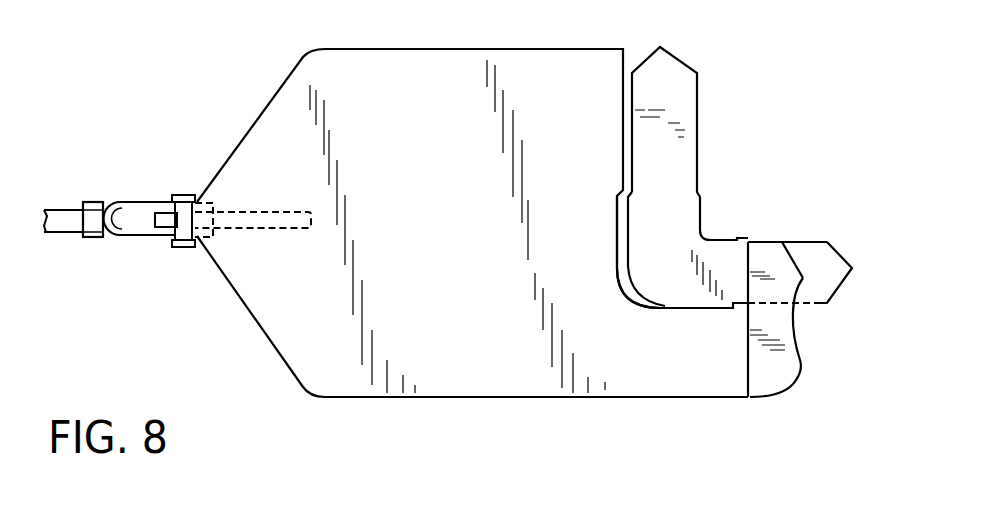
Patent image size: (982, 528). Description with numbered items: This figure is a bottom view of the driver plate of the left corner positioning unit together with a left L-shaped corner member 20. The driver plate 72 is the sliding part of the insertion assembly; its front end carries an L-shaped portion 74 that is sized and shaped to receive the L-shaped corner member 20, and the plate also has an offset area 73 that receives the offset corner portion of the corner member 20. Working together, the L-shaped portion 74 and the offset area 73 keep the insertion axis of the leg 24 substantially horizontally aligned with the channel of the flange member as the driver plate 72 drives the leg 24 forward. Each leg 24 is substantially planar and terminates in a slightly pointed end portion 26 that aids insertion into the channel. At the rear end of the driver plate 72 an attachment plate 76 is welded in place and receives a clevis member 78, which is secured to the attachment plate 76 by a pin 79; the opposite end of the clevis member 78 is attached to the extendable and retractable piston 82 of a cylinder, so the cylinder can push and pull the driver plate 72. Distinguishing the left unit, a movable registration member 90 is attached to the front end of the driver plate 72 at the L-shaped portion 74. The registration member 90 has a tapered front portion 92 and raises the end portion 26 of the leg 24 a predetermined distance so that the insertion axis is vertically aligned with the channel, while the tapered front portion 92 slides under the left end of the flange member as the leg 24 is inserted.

The L-shaped corner member 20 is at (705, 86).
The leg portion 24 is at (797, 242).
The pointed end portion 26 is at (840, 260).
The driver plate 72 is at (443, 157).
The offset area 73 is at (618, 205).
The L-shaped portion 74 is at (701, 384).
The attachment plate 76 is at (303, 231).
The clevis member 78 is at (117, 210).
The pin 79 is at (185, 248).
The piston 82 is at (78, 238).
The movable registration member 90 is at (799, 383).
The tapered front portion 92 is at (803, 282).